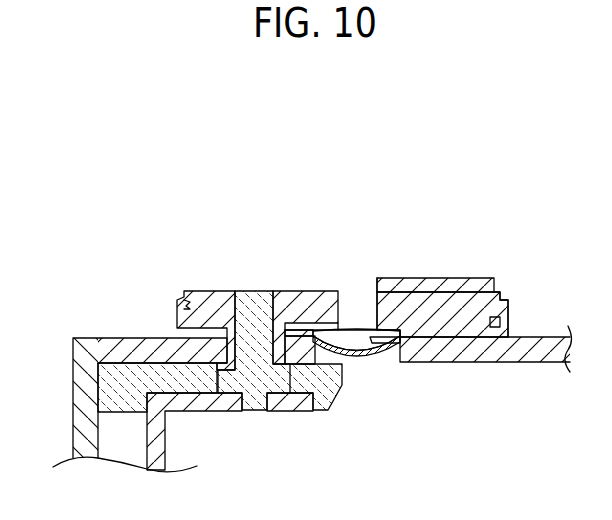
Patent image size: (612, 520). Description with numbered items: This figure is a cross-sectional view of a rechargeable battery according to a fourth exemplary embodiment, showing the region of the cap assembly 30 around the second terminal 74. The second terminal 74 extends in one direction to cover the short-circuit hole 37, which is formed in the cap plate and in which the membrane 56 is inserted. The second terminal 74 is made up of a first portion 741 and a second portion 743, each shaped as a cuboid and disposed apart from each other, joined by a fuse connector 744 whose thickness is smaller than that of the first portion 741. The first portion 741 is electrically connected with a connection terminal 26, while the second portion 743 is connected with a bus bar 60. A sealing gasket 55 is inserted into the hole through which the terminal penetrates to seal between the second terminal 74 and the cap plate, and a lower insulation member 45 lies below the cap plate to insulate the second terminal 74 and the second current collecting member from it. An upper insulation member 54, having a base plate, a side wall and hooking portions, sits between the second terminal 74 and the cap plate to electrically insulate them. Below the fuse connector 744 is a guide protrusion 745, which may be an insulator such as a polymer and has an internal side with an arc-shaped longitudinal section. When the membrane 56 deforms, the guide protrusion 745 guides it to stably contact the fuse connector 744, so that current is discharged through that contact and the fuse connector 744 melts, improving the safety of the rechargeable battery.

The connection terminal 26 is at (253, 310).
The cap assembly 30 is at (545, 337).
The short-circuit hole 37 is at (388, 356).
The lower insulation member 45 is at (123, 388).
The upper insulation member 54 is at (510, 299).
The sealing gasket 55 is at (172, 348).
The membrane 56 is at (371, 358).
The bus bar 60 is at (462, 285).
The second terminal 74 is at (313, 291).
The first portion 741 is at (203, 312).
The second portion 743 is at (408, 308).
The fuse connector 744 is at (358, 330).
The guide protrusion 745 is at (357, 365).